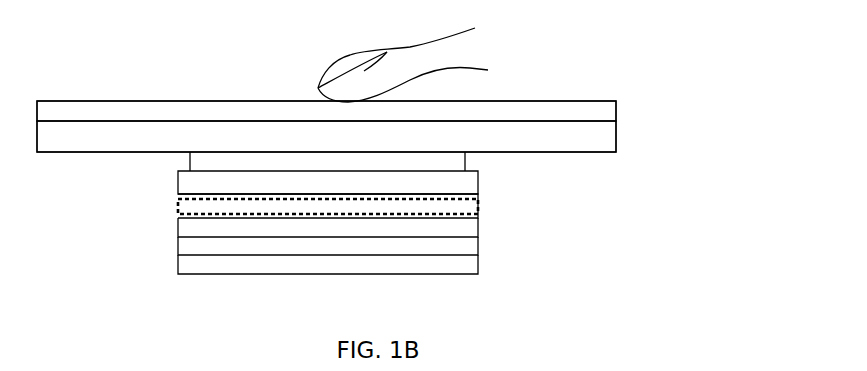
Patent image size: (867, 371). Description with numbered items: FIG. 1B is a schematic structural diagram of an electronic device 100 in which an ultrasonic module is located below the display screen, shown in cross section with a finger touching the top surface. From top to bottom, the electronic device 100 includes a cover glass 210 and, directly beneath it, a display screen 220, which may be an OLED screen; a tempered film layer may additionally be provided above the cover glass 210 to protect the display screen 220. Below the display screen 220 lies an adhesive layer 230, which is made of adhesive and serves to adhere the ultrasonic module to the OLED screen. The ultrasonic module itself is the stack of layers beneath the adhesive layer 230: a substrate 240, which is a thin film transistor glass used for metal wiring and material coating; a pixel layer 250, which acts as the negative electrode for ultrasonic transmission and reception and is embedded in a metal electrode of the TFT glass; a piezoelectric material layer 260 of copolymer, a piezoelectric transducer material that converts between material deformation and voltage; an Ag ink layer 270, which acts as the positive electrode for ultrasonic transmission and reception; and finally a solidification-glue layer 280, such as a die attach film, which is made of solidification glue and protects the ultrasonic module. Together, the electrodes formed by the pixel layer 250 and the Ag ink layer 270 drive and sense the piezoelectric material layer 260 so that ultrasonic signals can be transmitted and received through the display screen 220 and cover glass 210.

The electronic device 100 is at (262, 68).
The cover glass 210 is at (616, 105).
The display screen 220 is at (616, 137).
The adhesive layer 230 is at (467, 158).
The substrate 240 is at (178, 185).
The pixel layer 250 is at (478, 203).
The piezoelectric material layer 260 is at (478, 227).
The Ag ink layer 270 is at (178, 246).
The solidification-glue layer 280 is at (328, 274).